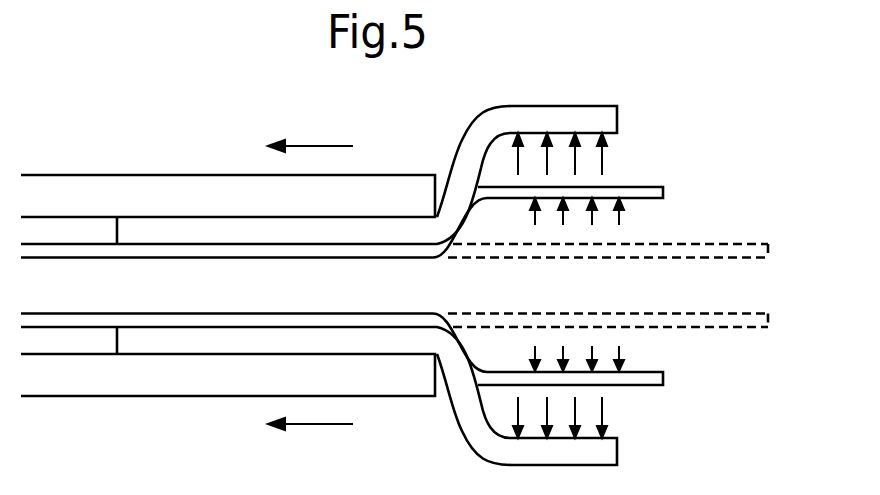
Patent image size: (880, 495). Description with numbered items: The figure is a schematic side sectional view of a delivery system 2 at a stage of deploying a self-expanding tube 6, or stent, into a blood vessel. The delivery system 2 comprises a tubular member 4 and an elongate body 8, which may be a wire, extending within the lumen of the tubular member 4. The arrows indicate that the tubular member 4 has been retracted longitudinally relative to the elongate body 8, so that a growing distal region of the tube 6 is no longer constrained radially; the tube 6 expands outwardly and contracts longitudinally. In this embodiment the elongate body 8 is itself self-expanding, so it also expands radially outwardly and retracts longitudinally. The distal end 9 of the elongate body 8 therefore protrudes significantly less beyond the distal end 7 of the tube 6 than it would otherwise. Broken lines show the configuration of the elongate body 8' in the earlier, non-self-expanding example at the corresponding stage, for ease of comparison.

The delivery system 2 is at (708, 105).
The tubular member 4 is at (216, 198).
The self-expanding tube 6 is at (549, 120).
The distal end of the tube 7 is at (617, 451).
The elongate body 8 is at (342, 189).
The elongate body configuration of the non-self-expanding example 8' is at (608, 217).
The distal end of the elongate body 9 is at (663, 378).